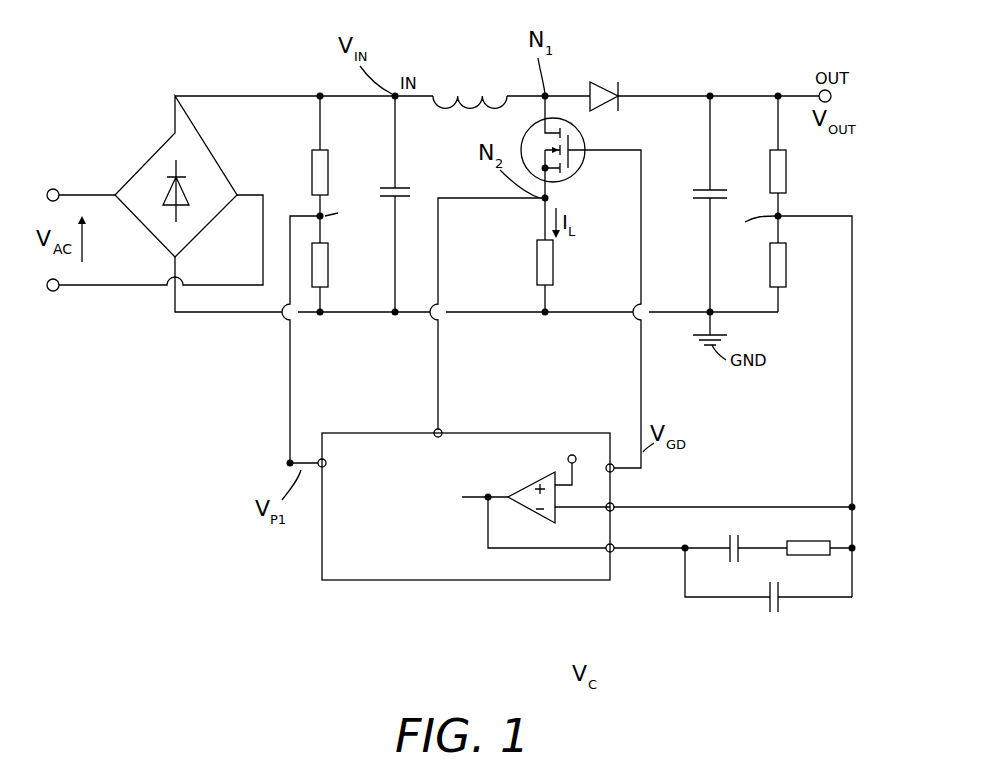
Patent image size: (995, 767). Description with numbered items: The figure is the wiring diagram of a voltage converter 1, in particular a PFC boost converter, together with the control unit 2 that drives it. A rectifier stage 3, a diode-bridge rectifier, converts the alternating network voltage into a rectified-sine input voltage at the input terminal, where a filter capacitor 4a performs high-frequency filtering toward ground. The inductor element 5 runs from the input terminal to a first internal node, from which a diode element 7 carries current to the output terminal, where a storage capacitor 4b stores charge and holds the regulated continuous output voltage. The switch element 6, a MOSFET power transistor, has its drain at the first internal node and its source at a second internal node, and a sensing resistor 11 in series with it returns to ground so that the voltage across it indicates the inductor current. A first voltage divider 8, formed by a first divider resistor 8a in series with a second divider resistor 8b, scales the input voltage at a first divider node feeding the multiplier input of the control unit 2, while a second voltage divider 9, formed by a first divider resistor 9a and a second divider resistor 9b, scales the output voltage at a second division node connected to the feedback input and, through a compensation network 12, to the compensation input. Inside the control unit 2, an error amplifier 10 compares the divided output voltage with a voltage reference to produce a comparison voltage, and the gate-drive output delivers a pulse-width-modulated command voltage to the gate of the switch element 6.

The voltage converter 1 is at (180, 56).
The control unit 2 is at (318, 580).
The rectifier stage 3 is at (135, 178).
The filter capacitor 4a is at (402, 192).
The storage capacitor 4b is at (702, 204).
The inductor element 5 is at (445, 100).
The switch element 6 is at (570, 172).
The diode element 7 is at (598, 85).
The first voltage divider 8 is at (288, 182).
The first divider resistor 8a is at (330, 166).
The second divider resistor 8b is at (330, 275).
The second voltage divider 9 is at (748, 176).
The first divider resistor 9a is at (788, 165).
The second divider resistor 9b is at (788, 276).
The error amplifier 10 is at (518, 497).
The sensing resistor 11 is at (535, 266).
The compensation network 12 is at (702, 598).